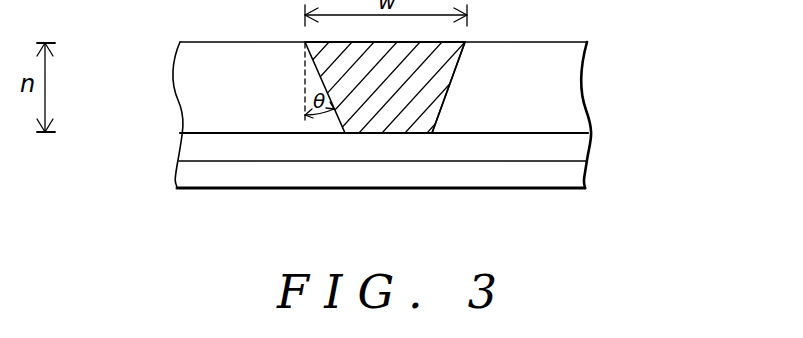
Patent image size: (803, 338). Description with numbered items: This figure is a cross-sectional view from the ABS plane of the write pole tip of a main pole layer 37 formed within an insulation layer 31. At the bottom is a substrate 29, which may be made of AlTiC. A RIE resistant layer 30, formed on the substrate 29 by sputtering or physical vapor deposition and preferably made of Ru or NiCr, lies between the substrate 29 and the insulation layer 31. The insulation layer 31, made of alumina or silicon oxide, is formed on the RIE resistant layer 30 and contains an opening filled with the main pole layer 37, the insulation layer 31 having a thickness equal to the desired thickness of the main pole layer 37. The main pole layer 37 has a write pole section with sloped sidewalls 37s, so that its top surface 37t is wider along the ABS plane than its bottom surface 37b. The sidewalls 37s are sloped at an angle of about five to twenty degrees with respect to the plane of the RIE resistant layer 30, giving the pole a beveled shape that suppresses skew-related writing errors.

The substrate 29 is at (195, 175).
The RIE resistant layer 30 is at (195, 146).
The insulation layer 31 is at (195, 97).
The main pole layer 37 is at (387, 115).
The top surface 37t is at (305, 43).
The bottom surface 37b is at (345, 133).
The sloped sidewalls 37s is at (443, 103).